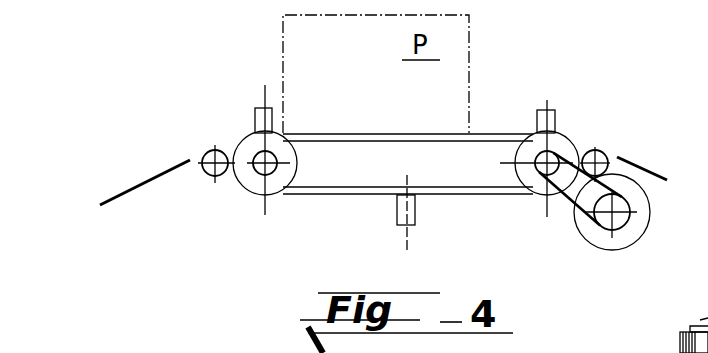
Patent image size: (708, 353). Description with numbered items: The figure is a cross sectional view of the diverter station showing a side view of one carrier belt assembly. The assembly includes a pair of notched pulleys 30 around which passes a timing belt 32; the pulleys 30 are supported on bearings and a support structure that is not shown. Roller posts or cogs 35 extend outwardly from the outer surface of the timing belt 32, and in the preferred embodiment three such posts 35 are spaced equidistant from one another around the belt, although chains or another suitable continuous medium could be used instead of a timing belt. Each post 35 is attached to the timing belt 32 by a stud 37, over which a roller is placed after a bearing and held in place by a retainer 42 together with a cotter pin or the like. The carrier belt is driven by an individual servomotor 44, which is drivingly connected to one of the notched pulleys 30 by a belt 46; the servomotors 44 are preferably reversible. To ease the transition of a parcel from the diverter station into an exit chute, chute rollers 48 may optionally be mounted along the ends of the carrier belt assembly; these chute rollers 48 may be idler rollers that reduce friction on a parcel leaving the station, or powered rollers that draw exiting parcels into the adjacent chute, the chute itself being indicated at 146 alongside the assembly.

The guide bar 146 is at (145, 180).
The notched pulley 30 is at (280, 180).
The timing belt 32 is at (331, 133).
The roller post 35 is at (255, 120).
The stud 37 is at (706, 322).
The retainer 42 is at (695, 326).
The servomotor 44 is at (597, 229).
The belt 46 is at (570, 205).
The chute roller 48 is at (205, 168).